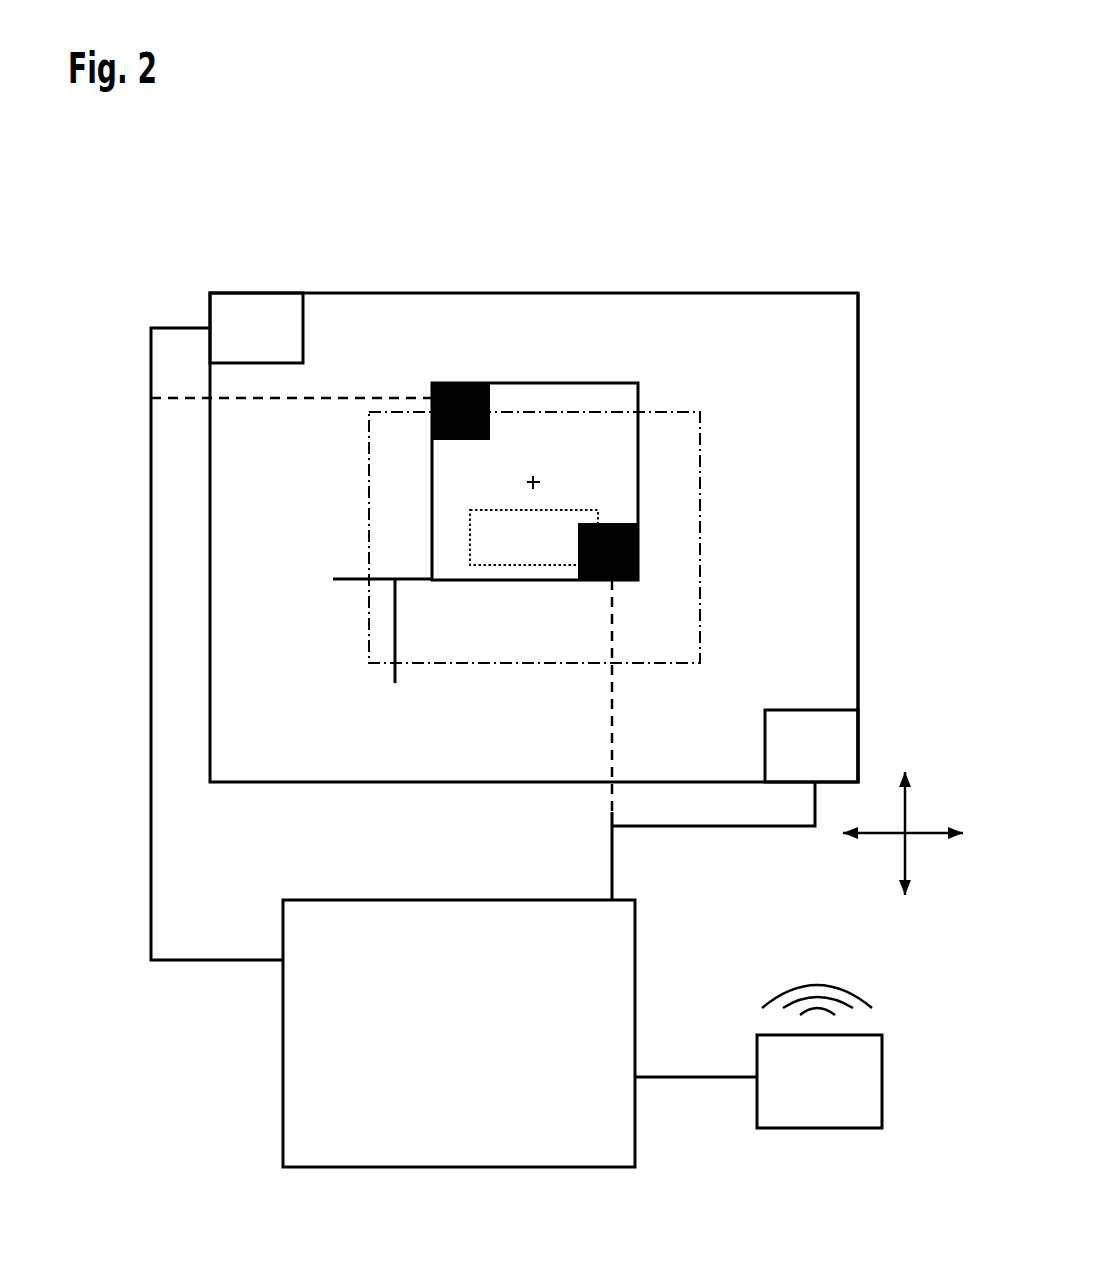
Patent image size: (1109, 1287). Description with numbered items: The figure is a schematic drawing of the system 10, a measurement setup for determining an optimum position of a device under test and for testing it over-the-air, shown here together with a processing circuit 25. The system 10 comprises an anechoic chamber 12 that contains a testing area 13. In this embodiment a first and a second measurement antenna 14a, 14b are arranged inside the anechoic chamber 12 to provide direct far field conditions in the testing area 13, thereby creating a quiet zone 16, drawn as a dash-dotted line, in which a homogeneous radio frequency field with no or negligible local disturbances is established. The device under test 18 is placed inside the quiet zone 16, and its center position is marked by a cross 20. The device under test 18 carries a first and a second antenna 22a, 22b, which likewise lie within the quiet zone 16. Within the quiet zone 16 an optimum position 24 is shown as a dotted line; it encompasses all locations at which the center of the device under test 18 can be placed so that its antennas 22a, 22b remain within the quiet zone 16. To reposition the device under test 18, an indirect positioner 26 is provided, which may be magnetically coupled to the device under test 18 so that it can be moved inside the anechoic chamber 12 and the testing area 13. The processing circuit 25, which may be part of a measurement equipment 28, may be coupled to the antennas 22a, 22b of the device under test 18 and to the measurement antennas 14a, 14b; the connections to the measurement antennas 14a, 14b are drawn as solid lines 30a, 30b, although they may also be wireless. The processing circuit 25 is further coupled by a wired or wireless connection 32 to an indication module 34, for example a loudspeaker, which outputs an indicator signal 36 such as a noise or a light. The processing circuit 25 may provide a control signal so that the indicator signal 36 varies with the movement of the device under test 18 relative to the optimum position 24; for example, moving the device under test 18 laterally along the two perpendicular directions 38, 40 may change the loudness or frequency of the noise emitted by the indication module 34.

The system 10 is at (574, 120).
The anechoic chamber 12 is at (583, 293).
The testing area 13 is at (760, 293).
The first measurement antenna 14a is at (263, 313).
The second measurement antenna 14b is at (827, 768).
The quiet zone 16 is at (660, 412).
The device under test 18 is at (638, 475).
The cross 20 is at (533, 482).
The first antenna 22a is at (457, 382).
The second antenna 22b is at (638, 553).
The optimum position 24 is at (487, 565).
The processing circuit 25 is at (605, 981).
The indirect positioner 26 is at (372, 643).
The measurement equipment 28 is at (238, 238).
The solid line 30a is at (151, 897).
The solid line 30b is at (610, 827).
The connection 32 is at (693, 1075).
The indication module 34 is at (858, 1088).
The indicator signal 36 is at (785, 973).
The direction 38 is at (933, 830).
The direction 40 is at (905, 867).